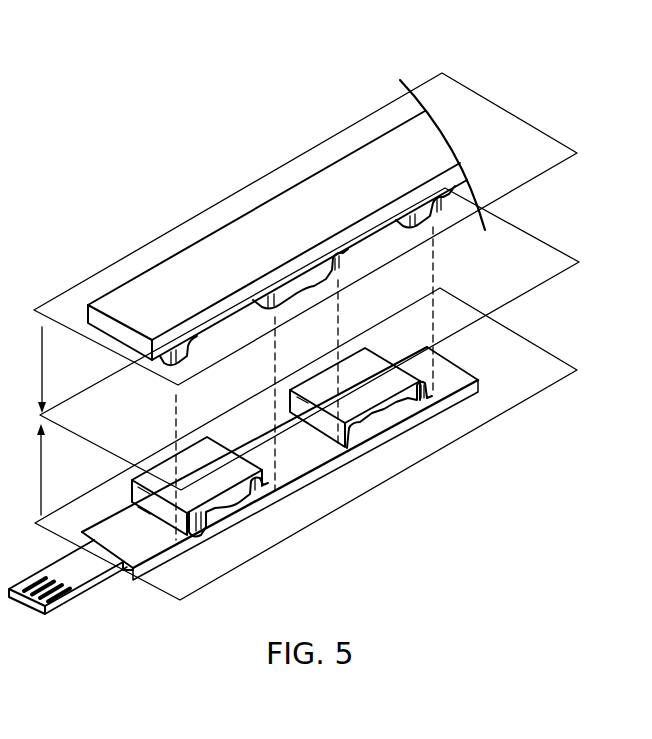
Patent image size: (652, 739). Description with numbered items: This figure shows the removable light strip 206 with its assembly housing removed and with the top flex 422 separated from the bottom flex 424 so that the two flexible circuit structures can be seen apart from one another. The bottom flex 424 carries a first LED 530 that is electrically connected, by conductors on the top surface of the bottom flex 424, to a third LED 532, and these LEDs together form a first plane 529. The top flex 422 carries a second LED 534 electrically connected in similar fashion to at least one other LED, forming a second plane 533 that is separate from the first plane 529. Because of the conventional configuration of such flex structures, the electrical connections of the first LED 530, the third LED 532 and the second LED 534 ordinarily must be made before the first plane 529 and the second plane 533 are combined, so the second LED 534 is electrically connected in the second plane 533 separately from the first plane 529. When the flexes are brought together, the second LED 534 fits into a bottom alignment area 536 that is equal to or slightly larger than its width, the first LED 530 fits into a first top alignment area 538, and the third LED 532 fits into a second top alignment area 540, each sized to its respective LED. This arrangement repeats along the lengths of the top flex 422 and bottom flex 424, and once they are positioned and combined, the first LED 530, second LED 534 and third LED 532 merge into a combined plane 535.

The removable light strip 206 is at (117, 130).
The top flex 422 is at (401, 147).
The bottom flex 424 is at (432, 407).
The first plane 529 is at (547, 352).
The first LED 530 is at (210, 525).
The third LED 532 is at (381, 420).
The second plane 533 is at (547, 136).
The second LED 534 is at (300, 272).
The combined plane 535 is at (547, 240).
The bottom alignment area 536 is at (328, 462).
The first top alignment area 538 is at (228, 295).
The second top alignment area 540 is at (378, 220).